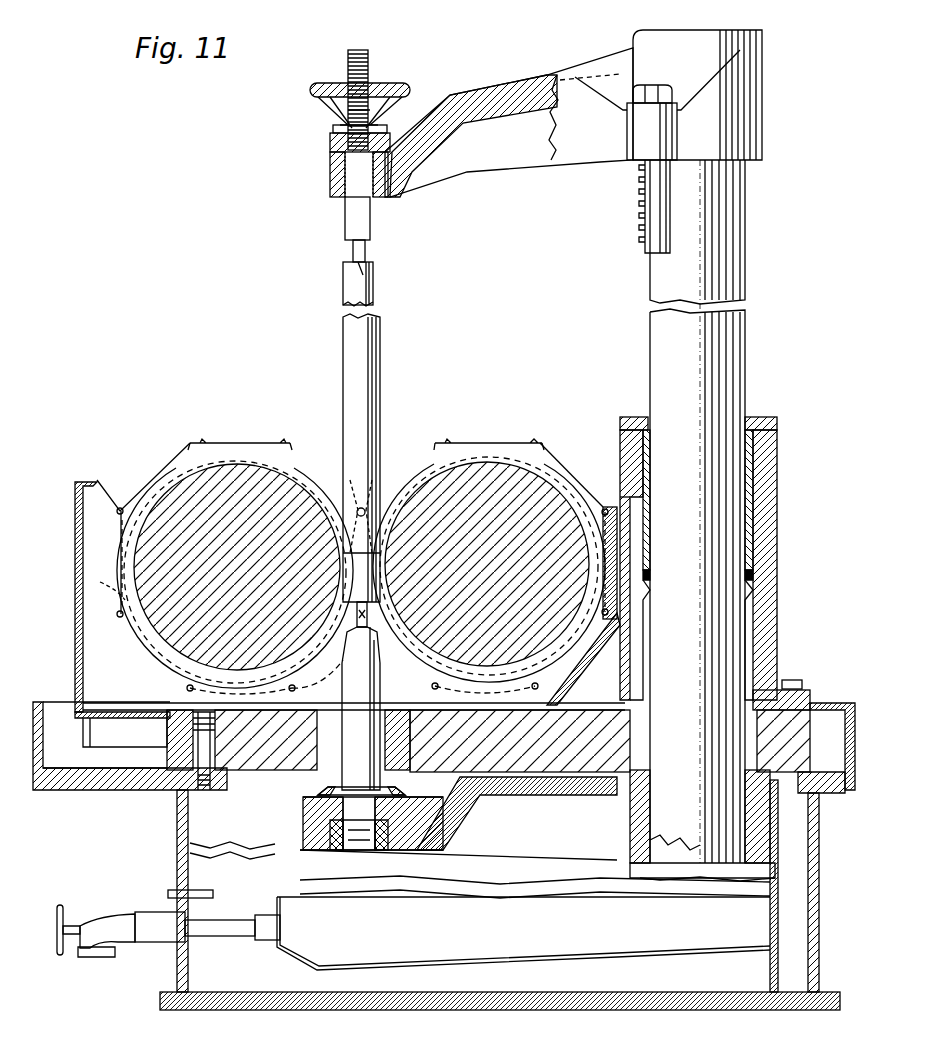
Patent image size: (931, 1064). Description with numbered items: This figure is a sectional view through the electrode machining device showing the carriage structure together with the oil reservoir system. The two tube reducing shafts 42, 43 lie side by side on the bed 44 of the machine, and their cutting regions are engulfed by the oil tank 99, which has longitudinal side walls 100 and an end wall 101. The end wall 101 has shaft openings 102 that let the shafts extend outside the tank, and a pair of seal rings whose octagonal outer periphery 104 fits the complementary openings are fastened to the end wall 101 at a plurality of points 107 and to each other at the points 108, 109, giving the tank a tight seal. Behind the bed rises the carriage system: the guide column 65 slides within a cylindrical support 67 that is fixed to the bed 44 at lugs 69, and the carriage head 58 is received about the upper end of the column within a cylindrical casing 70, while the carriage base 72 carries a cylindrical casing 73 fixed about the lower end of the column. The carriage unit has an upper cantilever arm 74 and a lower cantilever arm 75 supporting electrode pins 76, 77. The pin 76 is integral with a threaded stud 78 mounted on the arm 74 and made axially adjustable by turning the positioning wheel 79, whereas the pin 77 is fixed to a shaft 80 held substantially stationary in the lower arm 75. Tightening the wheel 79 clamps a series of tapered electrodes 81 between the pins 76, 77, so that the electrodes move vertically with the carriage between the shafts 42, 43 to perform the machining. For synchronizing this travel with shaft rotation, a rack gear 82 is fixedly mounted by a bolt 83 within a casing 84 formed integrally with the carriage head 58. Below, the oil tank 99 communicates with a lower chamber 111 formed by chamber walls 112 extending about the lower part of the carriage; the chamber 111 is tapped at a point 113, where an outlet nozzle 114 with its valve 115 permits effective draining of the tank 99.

The tube reducing shaft 42 is at (235, 490).
The tube reducing shaft 43 is at (496, 494).
The bed 44 is at (573, 750).
The carriage head 58 is at (698, 58).
The guide column 65 is at (735, 358).
The cylindrical support 67 is at (770, 493).
The lug 69 is at (793, 680).
The cylindrical casing 70 is at (752, 95).
The carriage base 72 is at (535, 803).
The cylindrical casing 73 is at (628, 843).
The upper cantilever arm 74 is at (480, 92).
The lower cantilever arm 75 is at (443, 828).
The electrode pin 76 is at (366, 250).
The electrode pin 77 is at (432, 687).
The threaded stud 78 is at (372, 56).
The positioning wheel 79 is at (322, 84).
The shaft 80 is at (368, 733).
The tapered electrode 81 is at (380, 394).
The rack gear 82 is at (652, 204).
The bolt 83 is at (668, 86).
The casing 84 is at (632, 130).
The oil tank 99 is at (67, 602).
The longitudinal side wall 100 is at (78, 626).
The end wall 101 is at (101, 510).
The shaft opening 102 is at (104, 579).
The octagonal outer periphery 104 is at (150, 650).
The fastening point 107 is at (118, 618).
The fastening point 108 is at (383, 468).
The fastening point 109 is at (295, 689).
The lower chamber 111 is at (382, 944).
The chamber wall 112 is at (510, 995).
The tap point 113 is at (246, 916).
The outlet nozzle 114 is at (132, 918).
The valve 115 is at (90, 922).